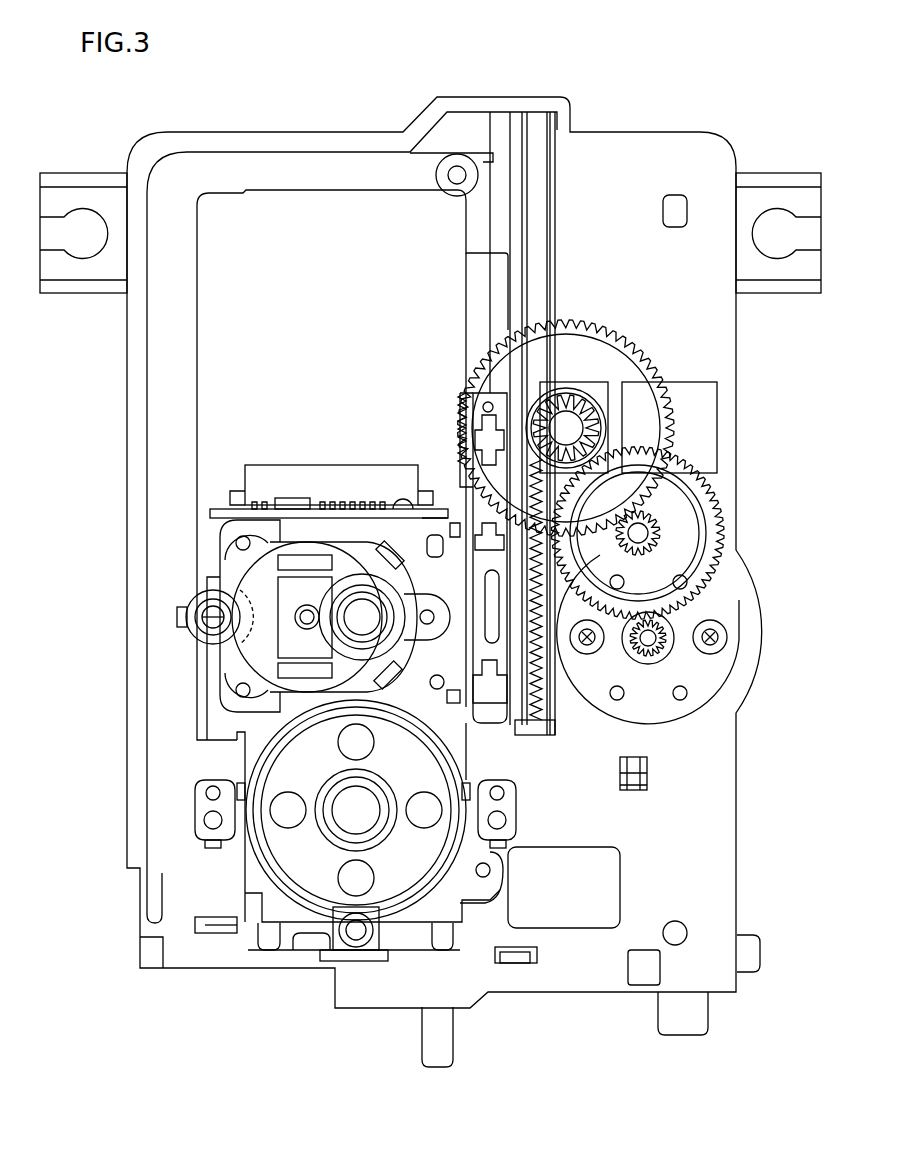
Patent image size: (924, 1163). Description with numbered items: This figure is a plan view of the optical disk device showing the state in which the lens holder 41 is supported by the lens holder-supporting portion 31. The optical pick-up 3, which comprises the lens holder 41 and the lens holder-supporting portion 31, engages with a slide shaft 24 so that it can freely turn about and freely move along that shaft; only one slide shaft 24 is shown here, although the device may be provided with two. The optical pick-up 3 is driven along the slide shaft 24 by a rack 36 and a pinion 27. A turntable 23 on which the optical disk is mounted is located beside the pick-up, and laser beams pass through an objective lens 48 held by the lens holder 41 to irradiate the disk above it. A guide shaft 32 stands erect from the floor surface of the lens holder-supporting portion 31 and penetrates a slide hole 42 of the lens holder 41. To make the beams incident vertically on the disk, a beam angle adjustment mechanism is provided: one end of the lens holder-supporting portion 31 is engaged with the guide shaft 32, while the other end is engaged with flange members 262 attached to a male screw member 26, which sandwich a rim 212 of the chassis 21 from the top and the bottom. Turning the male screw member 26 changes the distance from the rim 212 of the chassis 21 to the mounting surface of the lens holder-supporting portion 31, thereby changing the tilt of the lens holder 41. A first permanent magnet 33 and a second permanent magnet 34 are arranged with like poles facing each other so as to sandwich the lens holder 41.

The chassis 21 is at (160, 372).
The rim 212 is at (178, 458).
The turntable 23 is at (294, 917).
The slide shaft 24 is at (477, 277).
The male screw member 26 is at (150, 634).
The flange members 262 is at (177, 620).
The pinion 27 is at (580, 390).
The optical pick-up 3 is at (246, 645).
The lens holder-supporting portion 31 is at (252, 658).
The guide shaft 32 is at (303, 627).
The first permanent magnet 33 is at (293, 615).
The second permanent magnet 34 is at (298, 673).
The rack 36 is at (538, 688).
The lens holder 41 is at (277, 638).
The slide hole 42 is at (275, 562).
The objective lens 48 is at (492, 813).